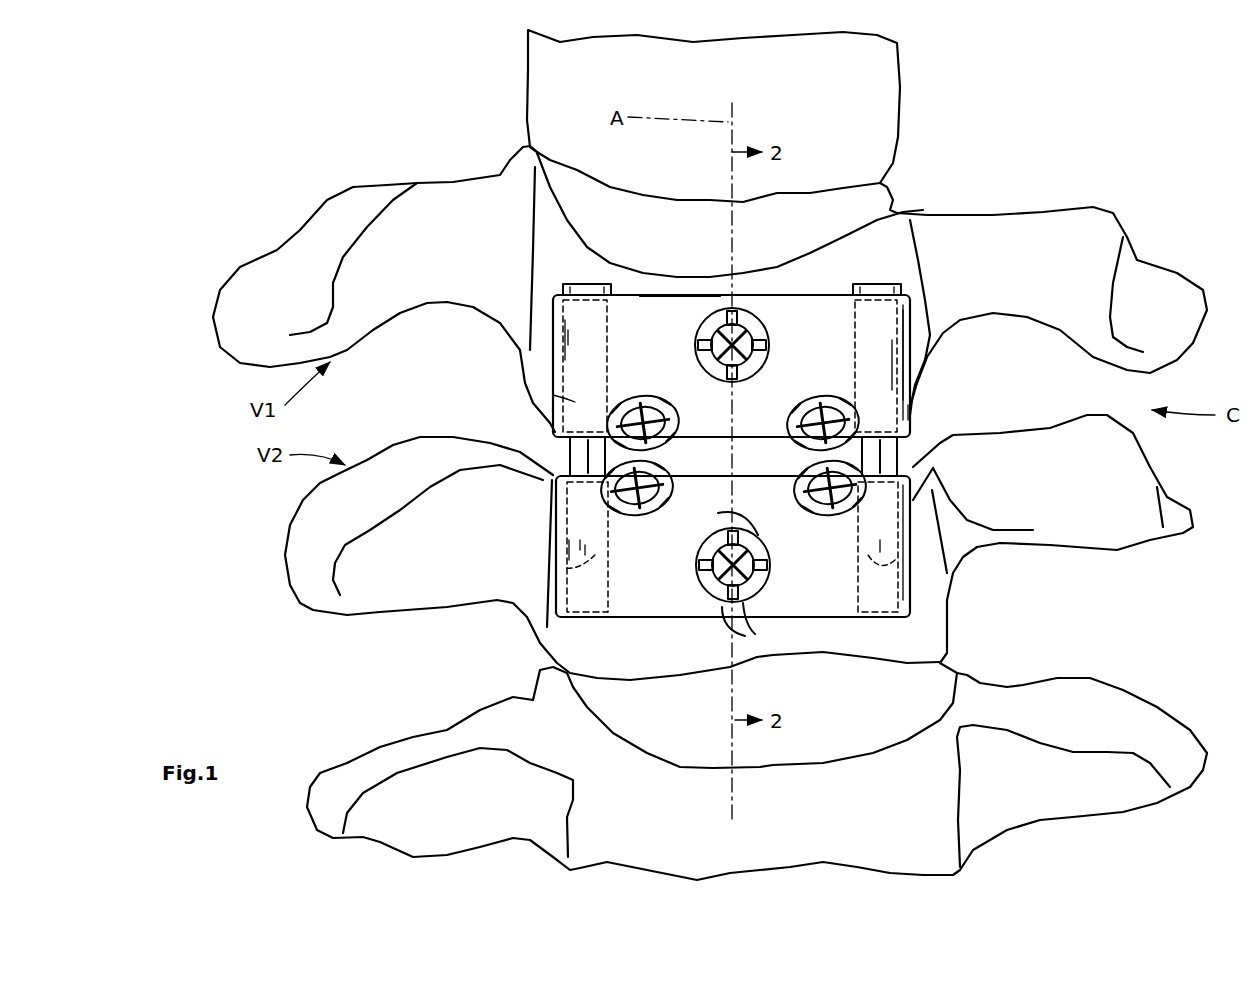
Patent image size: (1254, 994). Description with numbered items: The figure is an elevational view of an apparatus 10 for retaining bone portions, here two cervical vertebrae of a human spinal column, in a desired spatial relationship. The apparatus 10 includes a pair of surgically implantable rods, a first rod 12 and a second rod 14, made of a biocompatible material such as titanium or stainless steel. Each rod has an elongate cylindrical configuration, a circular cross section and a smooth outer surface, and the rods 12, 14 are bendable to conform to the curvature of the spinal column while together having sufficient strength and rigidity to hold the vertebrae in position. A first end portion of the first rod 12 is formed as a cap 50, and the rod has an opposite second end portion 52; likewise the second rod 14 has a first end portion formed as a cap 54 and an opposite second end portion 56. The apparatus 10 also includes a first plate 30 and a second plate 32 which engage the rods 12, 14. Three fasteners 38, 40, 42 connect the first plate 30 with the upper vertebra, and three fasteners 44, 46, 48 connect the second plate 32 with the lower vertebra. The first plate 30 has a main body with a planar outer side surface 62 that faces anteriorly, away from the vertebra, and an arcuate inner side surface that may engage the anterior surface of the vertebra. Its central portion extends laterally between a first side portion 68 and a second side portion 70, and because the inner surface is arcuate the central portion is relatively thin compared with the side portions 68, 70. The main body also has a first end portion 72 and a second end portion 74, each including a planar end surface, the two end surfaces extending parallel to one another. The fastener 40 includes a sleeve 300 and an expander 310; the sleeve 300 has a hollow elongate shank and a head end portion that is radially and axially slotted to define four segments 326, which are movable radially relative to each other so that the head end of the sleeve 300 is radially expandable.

The apparatus 10 is at (470, 388).
The first rod 12 is at (900, 453).
The second rod 14 is at (562, 450).
The first plate 30 is at (553, 352).
The second plate 32 is at (553, 511).
The fastener 38 is at (740, 312).
The fastener 40 is at (820, 400).
The fastener 42 is at (640, 395).
The fastener 44 is at (710, 597).
The fastener 46 is at (825, 510).
The fastener 48 is at (637, 510).
The cap 50 is at (880, 285).
The second end portion 52 is at (895, 560).
The cap 54 is at (585, 290).
The second end portion 56 is at (567, 568).
The planar outer side surface 62 is at (873, 358).
The first side portion 68 is at (907, 413).
The second side portion 70 is at (557, 402).
The first end portion 72 is at (682, 296).
The second end portion 74 is at (727, 437).
The sleeve 300 is at (765, 588).
The expander 310 is at (700, 585).
The segments 326 is at (740, 513).